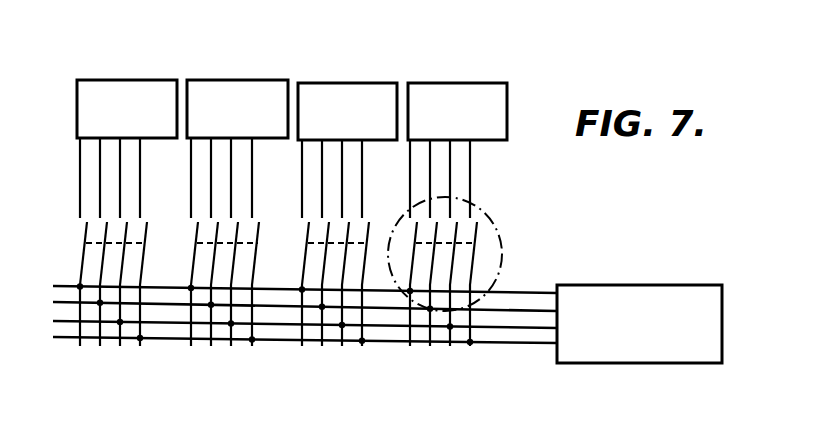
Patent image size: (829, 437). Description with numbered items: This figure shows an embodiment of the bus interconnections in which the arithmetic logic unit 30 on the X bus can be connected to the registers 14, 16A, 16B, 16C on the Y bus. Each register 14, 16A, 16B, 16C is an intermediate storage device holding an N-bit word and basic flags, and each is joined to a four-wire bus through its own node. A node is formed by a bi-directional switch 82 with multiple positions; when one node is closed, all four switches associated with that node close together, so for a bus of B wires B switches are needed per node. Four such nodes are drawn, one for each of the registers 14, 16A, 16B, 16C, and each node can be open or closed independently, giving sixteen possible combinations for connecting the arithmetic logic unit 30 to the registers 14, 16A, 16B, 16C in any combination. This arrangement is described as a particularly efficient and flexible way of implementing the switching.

The register 14 is at (146, 80).
The register 16A is at (265, 80).
The register 16B is at (381, 83).
The register 16C is at (490, 83).
The bi-directional switch 82 is at (494, 225).
The arithmetic logic unit 30 is at (668, 285).